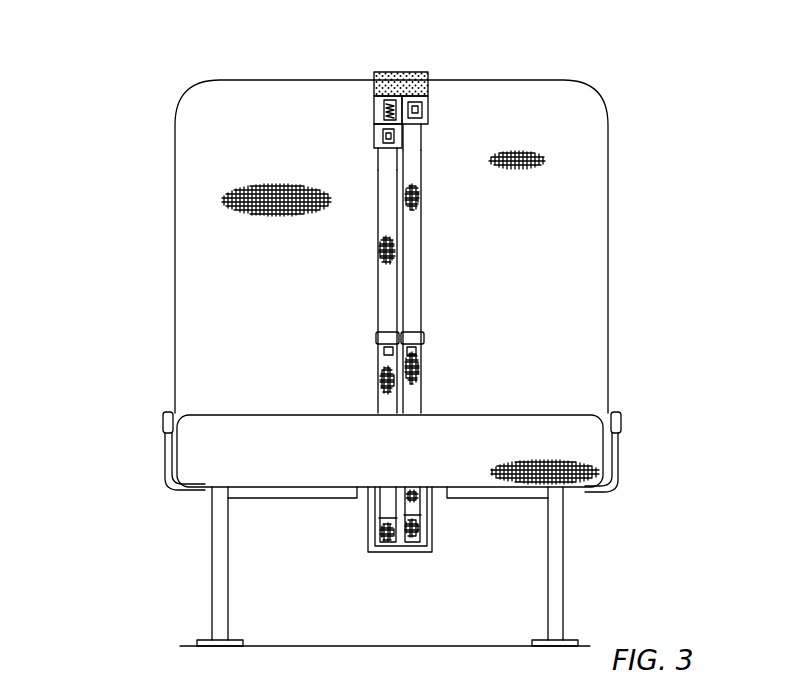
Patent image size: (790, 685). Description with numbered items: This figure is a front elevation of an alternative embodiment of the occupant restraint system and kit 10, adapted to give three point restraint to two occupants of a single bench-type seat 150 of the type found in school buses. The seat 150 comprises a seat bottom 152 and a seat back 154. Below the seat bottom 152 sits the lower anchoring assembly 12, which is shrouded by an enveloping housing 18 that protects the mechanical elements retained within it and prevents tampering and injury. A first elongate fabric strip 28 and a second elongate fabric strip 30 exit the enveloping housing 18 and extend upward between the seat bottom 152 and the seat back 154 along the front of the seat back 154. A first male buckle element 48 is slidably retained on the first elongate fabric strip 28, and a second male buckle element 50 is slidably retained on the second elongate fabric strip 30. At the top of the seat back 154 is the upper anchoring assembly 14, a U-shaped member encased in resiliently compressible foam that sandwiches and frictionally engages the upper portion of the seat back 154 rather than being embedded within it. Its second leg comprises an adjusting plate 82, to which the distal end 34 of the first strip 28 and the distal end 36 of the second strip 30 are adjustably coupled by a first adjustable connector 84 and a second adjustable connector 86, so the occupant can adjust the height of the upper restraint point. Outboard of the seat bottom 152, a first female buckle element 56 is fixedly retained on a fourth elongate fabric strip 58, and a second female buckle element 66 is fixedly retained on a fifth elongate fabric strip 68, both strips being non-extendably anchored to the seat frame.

The occupant restraint system and kit 10 is at (341, 268).
The lower anchoring assembly 12 is at (338, 523).
The upper anchoring assembly 14 is at (398, 52).
The enveloping housing 18 is at (430, 528).
The first elongate fabric strip 28 is at (378, 298).
The second elongate fabric strip 30 is at (423, 265).
The distal end 34 is at (386, 150).
The distal end 36 is at (421, 130).
The first male buckle element 48 is at (376, 338).
The second male buckle element 50 is at (424, 338).
The first female buckle element 56 is at (163, 418).
The fourth elongate fabric strip 58 is at (165, 468).
The second female buckle element 66 is at (624, 422).
The fifth elongate fabric strip 68 is at (620, 480).
The adjusting plate 82 is at (375, 112).
The first adjustable connector 84 is at (375, 139).
The second adjustable connector 86 is at (428, 112).
The bench-type seat 150 is at (618, 92).
The seat bottom 152 is at (368, 468).
The seat back 154 is at (548, 243).